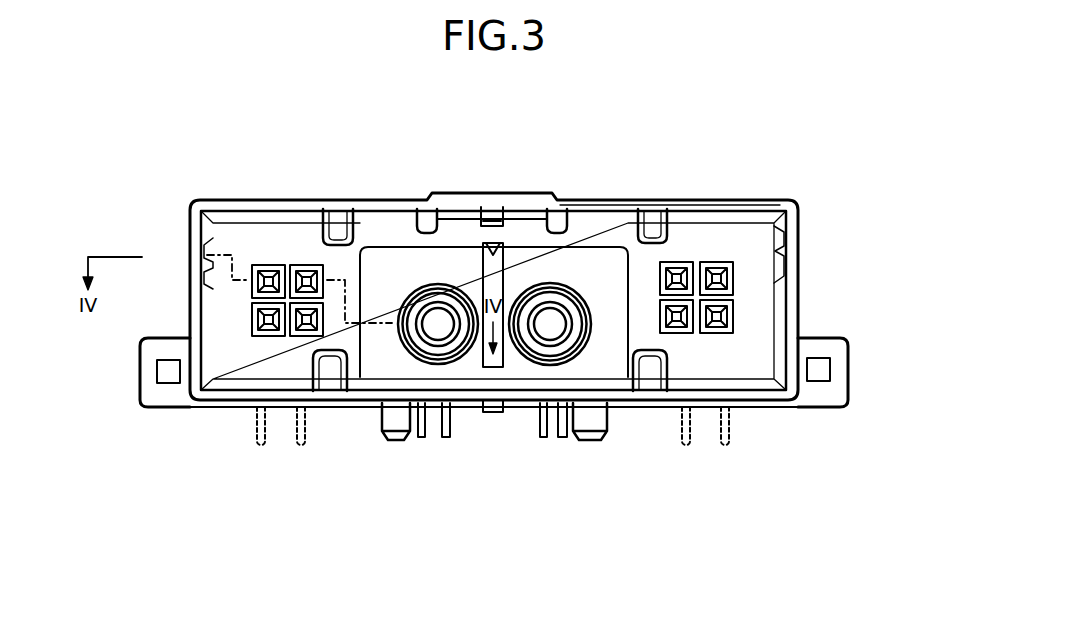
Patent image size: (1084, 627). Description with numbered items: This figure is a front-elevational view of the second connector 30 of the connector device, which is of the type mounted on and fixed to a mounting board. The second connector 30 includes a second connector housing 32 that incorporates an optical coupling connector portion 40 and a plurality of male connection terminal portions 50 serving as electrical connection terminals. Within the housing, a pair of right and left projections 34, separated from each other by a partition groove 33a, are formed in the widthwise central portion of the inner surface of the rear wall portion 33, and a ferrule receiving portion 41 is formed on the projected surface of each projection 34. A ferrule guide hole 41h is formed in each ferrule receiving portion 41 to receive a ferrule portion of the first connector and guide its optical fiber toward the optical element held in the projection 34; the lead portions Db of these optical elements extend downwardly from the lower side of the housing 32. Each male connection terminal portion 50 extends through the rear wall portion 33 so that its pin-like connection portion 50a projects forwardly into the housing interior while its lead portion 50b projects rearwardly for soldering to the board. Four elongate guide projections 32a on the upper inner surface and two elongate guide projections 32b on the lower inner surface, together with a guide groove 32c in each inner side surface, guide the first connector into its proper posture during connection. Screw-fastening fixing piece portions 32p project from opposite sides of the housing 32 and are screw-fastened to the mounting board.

The second connector 30 is at (515, 148).
The second connector housing 32 is at (612, 197).
The elongate guide projections 32a is at (343, 210).
The elongate guide projections 32b is at (329, 397).
The guide groove 32c is at (200, 250).
The screw-fastening fixing piece portions 32p is at (140, 376).
The rear wall portion 33 is at (735, 215).
The partition groove 33a is at (493, 207).
The projections 34 is at (378, 372).
The optical coupling connector portion 40 is at (522, 460).
The ferrule receiving portion 41 is at (470, 355).
The ferrule guide hole 41h is at (430, 312).
The male connection terminal portions 50 is at (526, 295).
The connection portion 50a is at (303, 273).
The lead portion 50b is at (301, 445).
The lead portions Db is at (421, 440).